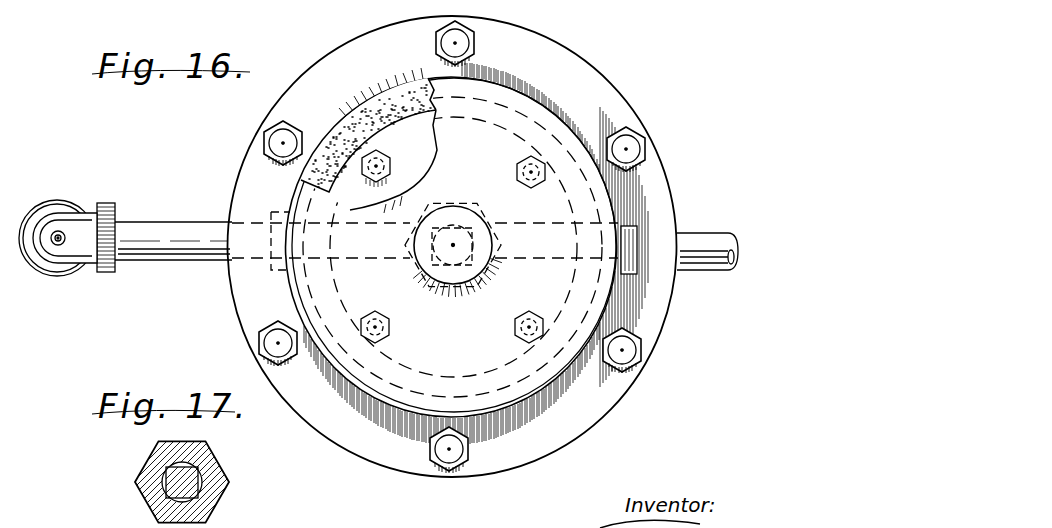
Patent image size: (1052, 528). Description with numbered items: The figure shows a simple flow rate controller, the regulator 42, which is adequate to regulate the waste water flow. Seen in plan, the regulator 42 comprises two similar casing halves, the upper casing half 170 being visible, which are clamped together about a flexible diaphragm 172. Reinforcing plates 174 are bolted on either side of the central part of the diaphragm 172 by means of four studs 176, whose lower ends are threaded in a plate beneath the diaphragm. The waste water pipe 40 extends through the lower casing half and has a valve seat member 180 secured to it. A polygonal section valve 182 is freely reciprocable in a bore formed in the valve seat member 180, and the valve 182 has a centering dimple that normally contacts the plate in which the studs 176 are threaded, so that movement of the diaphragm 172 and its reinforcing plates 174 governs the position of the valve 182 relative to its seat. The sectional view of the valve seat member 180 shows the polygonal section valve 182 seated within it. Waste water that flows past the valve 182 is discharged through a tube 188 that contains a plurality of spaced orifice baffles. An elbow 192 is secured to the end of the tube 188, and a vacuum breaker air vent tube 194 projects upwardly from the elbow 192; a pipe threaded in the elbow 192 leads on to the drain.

In FIG. 16, the waste water pipe 40 is at (710, 247).
In FIG. 16, the regulator 42 is at (345, 108).
In FIG. 16, the casing half 170 is at (660, 313).
In FIG. 16, the flexible diaphragm 172 is at (318, 190).
In FIG. 16, the reinforcing plates 174 is at (360, 205).
In FIG. 16, the studs 176 is at (392, 168).
In FIG. 16, the valve seat member 180 is at (445, 310).
In FIG. 17, the valve seat member 180 is at (206, 462).
In FIG. 16, the polygonal section valve 182 is at (456, 232).
In FIG. 17, the polygonal section valve 182 is at (190, 488).
In FIG. 16, the tube 188 is at (168, 222).
In FIG. 16, the elbow 192 is at (84, 247).
In FIG. 16, the vacuum breaker air vent tube 194 is at (63, 233).